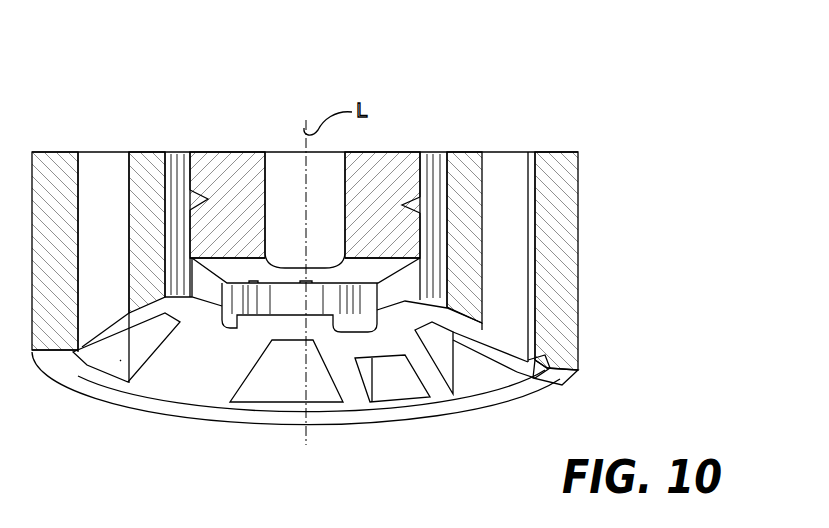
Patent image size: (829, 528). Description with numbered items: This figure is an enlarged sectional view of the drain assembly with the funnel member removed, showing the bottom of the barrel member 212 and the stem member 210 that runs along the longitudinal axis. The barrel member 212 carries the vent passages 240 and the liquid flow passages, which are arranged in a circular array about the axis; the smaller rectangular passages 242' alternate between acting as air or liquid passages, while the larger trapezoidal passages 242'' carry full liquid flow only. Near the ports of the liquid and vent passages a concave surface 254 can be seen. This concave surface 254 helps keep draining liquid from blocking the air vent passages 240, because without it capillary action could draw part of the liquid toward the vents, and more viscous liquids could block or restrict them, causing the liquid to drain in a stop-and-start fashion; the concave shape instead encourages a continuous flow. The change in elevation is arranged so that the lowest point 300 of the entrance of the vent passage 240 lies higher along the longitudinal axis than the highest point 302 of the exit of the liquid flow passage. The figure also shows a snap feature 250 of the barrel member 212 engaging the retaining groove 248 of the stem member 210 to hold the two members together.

The stem member 210 is at (395, 197).
The barrel member 212 is at (563, 272).
The vent passages 240 is at (174, 153).
The smaller rectangular passages 242' is at (321, 398).
The larger trapezoidal passages 242'' is at (315, 423).
The retaining groove 248 is at (193, 192).
The snap feature 250 is at (404, 206).
The concave surface 254 is at (217, 346).
The lowest point of the entrance of the vent passage 300 is at (360, 327).
The highest point of the exit of the liquid flow passage 302 is at (297, 341).